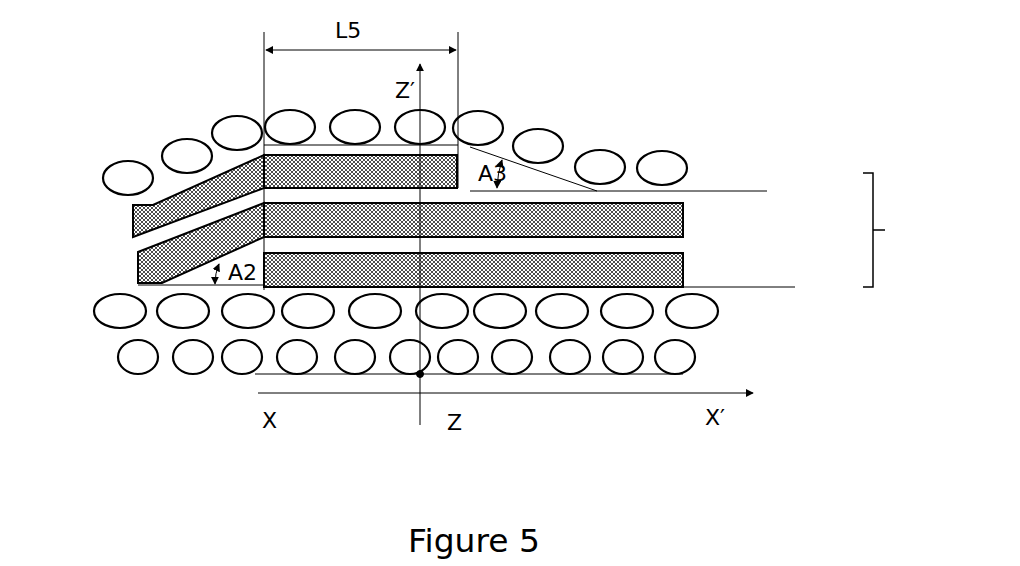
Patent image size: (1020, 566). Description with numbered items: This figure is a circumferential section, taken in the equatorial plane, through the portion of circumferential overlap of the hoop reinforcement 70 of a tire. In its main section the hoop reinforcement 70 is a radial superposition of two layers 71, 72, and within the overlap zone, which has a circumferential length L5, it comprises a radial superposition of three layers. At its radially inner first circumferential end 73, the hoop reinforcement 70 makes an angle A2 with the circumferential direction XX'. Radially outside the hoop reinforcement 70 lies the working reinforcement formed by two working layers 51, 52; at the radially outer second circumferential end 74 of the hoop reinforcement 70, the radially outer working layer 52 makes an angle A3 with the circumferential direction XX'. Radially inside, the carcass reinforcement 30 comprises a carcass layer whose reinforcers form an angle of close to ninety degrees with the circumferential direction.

The carcass reinforcement 30 is at (139, 355).
The working layer 51 is at (116, 313).
The radially outer working layer 52 is at (131, 173).
The hoop reinforcement 70 is at (893, 230).
The layer 71 is at (685, 272).
The layer 72 is at (685, 219).
The radially inner first circumferential end 73 is at (265, 286).
The radially outer second circumferential end 74 is at (441, 164).